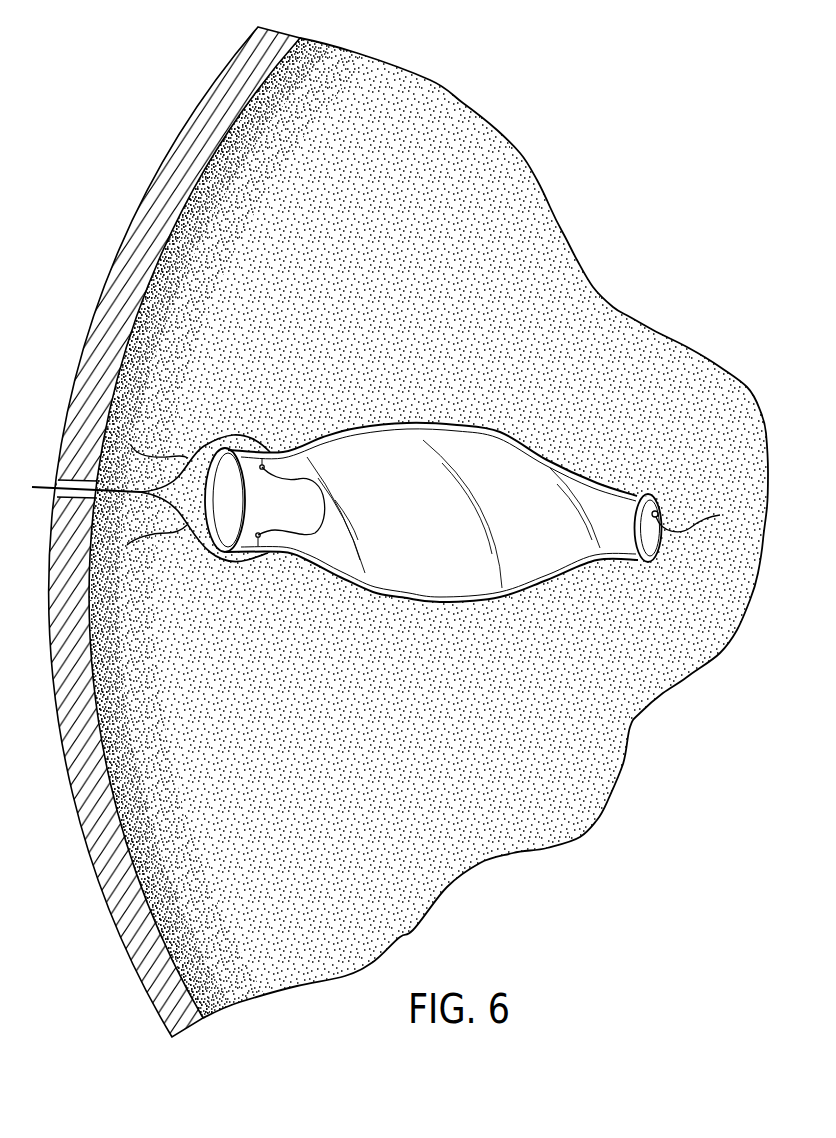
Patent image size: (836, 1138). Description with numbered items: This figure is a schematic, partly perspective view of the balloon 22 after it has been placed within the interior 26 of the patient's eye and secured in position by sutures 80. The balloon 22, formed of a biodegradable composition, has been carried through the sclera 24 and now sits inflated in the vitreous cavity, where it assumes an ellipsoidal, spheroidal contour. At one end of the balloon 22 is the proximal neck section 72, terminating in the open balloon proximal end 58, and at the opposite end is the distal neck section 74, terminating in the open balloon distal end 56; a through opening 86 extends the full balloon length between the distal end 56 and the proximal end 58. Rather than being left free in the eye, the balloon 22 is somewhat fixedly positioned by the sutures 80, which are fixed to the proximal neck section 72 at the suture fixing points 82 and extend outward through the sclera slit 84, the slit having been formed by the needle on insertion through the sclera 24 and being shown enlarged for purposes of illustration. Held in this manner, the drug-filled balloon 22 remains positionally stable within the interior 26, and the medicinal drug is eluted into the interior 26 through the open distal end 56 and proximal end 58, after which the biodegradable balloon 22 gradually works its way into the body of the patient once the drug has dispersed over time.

The balloon 22 is at (437, 421).
The sclera 24 is at (162, 192).
The interior of the eye 26 is at (368, 233).
The balloon distal end 56 is at (700, 517).
The balloon proximal end 58 is at (218, 446).
The proximal neck section 72 is at (272, 450).
The distal neck section 74 is at (634, 493).
The sutures 80 is at (148, 496).
The suture fixing points 82 is at (296, 501).
The sclera slit 84 is at (55, 488).
The through opening 86 is at (657, 512).